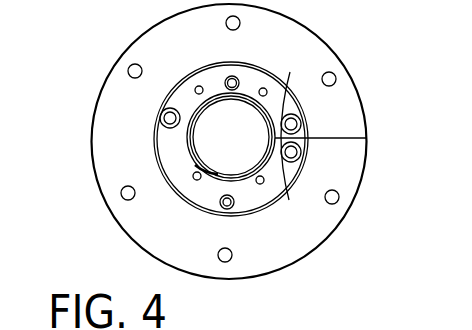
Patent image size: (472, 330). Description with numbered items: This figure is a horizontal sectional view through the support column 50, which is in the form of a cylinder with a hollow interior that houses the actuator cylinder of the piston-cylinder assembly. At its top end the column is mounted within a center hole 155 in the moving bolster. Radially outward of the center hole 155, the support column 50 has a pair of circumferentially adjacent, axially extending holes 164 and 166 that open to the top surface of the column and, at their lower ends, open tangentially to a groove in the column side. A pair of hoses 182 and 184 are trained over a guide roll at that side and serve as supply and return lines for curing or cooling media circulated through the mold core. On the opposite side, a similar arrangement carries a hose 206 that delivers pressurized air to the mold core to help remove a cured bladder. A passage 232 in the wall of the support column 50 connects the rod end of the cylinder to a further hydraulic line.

The support column 50 is at (108, 213).
The center hole 155 is at (201, 165).
The axially extending hole 164 is at (226, 76).
The axially extending hole 166 is at (276, 76).
The hose 182 is at (301, 156).
The hose 184 is at (301, 120).
The hose 206 is at (160, 121).
The passage 232 is at (234, 204).